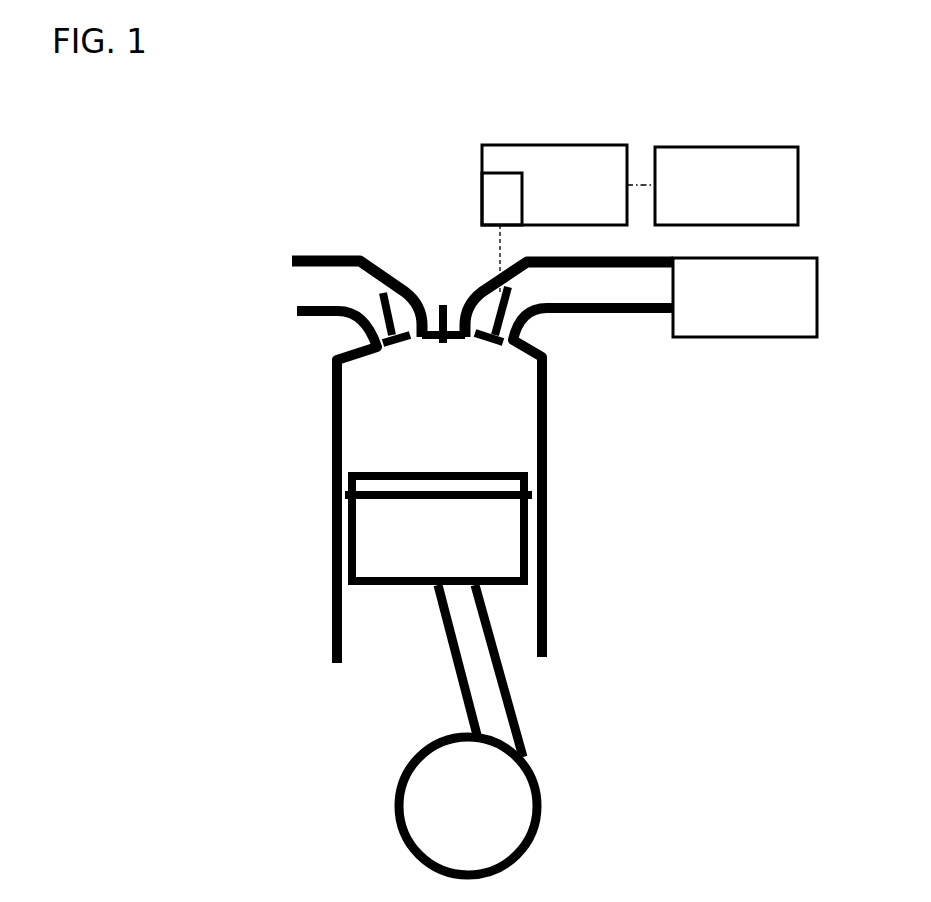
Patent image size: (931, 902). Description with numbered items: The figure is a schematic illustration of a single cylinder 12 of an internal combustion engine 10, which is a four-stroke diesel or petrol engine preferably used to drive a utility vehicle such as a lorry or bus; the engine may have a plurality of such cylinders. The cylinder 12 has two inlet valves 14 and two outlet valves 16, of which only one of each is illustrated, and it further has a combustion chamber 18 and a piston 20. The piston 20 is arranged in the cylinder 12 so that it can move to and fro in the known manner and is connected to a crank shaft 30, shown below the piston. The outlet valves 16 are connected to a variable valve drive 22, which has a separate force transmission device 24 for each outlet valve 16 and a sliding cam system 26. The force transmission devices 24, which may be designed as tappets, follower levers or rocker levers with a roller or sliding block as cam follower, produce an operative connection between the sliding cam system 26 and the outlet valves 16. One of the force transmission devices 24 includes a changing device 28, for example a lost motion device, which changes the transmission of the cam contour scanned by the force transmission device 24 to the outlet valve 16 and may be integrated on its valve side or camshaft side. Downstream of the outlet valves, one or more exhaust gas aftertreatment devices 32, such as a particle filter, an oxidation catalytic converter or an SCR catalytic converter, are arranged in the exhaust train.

The internal combustion engine 10 is at (433, 62).
The cylinder 12 is at (243, 204).
The inlet valve 14 is at (383, 298).
The outlet valve 16 is at (503, 315).
The combustion chamber 18 is at (478, 405).
The piston 20 is at (493, 532).
The variable valve drive 22 is at (466, 125).
The force transmission device 24 is at (530, 145).
The sliding cam system 26 is at (700, 147).
The changing device 28 is at (492, 207).
The crank shaft 30 is at (510, 838).
The exhaust gas aftertreatment device 32 is at (728, 337).